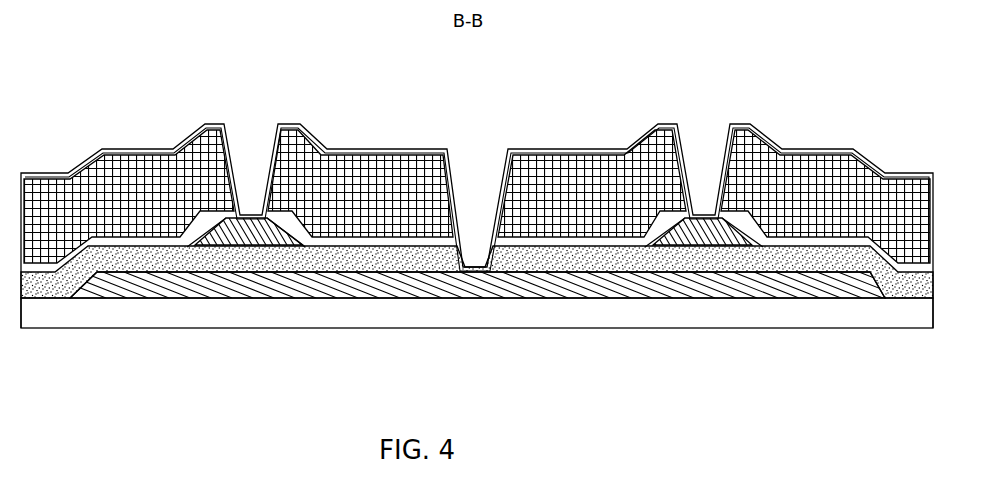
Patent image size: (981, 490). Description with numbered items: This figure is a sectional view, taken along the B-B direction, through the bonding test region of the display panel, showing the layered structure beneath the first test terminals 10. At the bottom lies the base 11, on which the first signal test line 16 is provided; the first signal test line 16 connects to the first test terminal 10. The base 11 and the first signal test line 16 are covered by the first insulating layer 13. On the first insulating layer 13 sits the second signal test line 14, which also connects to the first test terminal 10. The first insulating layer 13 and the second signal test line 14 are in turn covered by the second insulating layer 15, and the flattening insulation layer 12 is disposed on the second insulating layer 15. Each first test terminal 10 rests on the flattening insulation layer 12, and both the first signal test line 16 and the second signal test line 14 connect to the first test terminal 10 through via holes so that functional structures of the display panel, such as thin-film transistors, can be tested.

The first test terminal 10 is at (143, 153).
The base 11 is at (612, 306).
The flattening insulation layer 12 is at (73, 185).
The first insulating layer 13 is at (343, 250).
The second signal test line 14 is at (248, 217).
The second insulating layer 15 is at (303, 232).
The first signal test line 16 is at (463, 283).